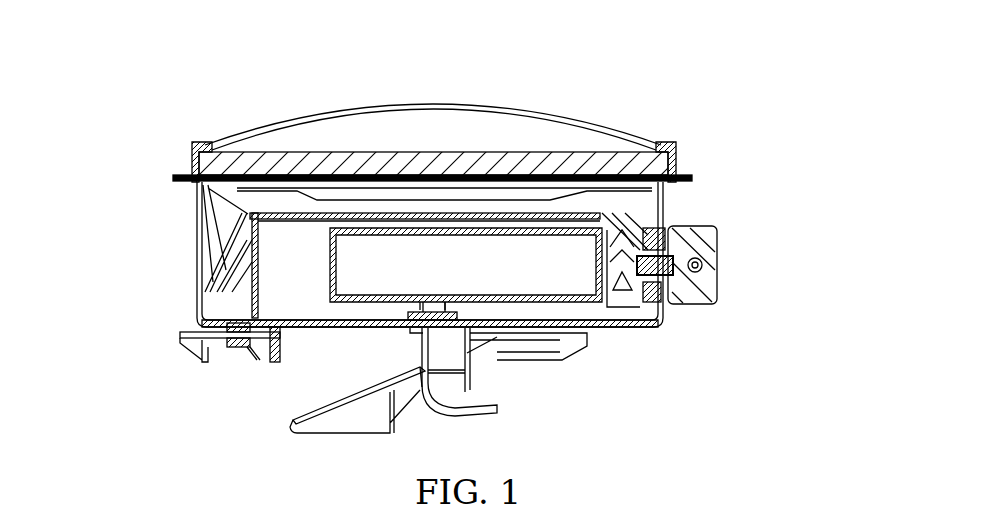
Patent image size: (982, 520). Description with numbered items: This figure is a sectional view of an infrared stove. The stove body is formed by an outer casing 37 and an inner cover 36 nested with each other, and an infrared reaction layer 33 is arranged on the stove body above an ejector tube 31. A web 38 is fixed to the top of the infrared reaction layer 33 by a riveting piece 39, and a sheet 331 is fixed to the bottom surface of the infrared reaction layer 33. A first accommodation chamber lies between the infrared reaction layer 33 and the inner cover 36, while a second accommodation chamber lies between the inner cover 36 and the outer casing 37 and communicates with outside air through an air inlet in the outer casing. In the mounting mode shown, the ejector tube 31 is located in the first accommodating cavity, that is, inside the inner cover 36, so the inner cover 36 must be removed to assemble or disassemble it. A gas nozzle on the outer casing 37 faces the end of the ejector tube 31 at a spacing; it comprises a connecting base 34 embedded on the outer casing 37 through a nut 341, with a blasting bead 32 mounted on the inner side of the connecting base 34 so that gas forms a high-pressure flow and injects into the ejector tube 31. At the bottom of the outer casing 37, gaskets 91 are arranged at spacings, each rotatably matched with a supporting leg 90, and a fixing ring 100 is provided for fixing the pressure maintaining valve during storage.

The web 38 is at (361, 91).
The riveting piece 39 is at (374, 129).
The infrared reaction layer 33 is at (364, 156).
The sheet 331 is at (351, 208).
The inner cover 36 is at (331, 265).
The outer casing 37 is at (157, 260).
The ejector tube 31 is at (568, 302).
The blasting bead 32 is at (704, 276).
The connecting base 34 is at (736, 258).
The nut 341 is at (728, 275).
The supporting leg 90 is at (241, 400).
The gasket 91 is at (171, 348).
The fixing ring 100 is at (617, 368).